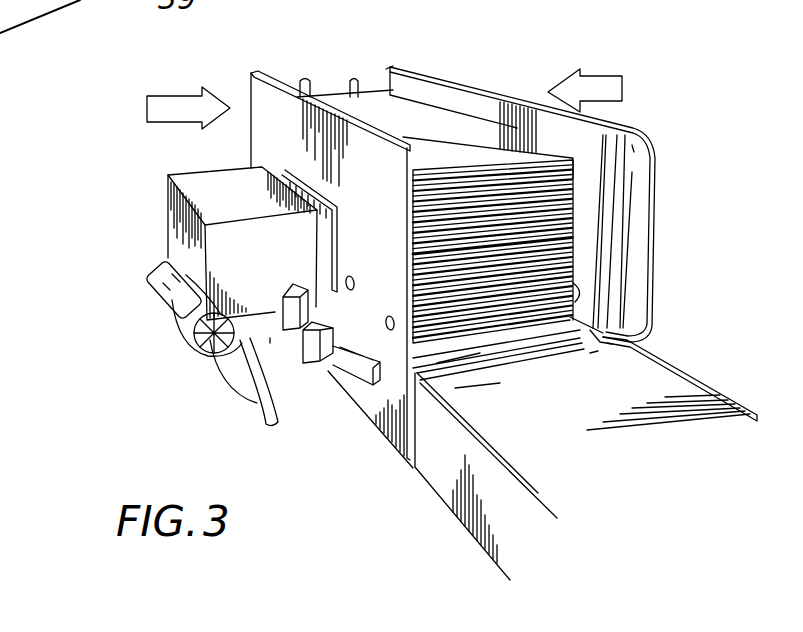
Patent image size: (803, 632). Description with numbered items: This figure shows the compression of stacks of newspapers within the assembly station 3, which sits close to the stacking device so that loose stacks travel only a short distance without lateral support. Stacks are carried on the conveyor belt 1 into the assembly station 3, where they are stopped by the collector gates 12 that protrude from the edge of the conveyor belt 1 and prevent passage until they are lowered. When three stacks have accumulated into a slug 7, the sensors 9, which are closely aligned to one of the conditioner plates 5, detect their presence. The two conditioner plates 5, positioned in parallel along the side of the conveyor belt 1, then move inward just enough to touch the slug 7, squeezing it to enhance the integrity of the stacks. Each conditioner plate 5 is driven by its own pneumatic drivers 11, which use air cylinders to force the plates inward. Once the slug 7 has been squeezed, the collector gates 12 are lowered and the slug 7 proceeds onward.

The conveyor belt 1 is at (650, 388).
The assembly station 3 is at (130, 328).
The conditioner plate 5 is at (265, 97).
The slug 7 is at (452, 126).
The sensor 9 is at (287, 312).
The pneumatic driver 11 is at (193, 252).
The collector gate 12 is at (345, 78).